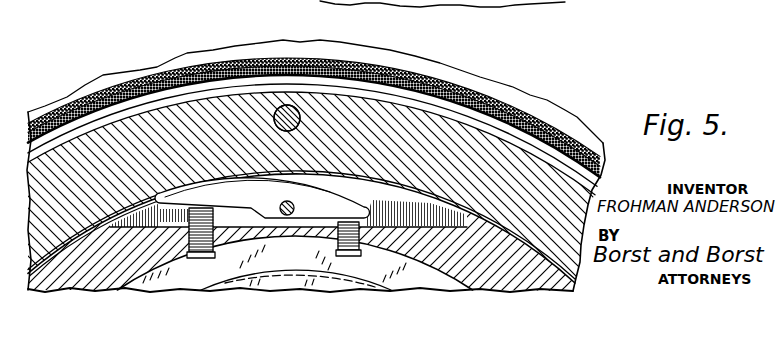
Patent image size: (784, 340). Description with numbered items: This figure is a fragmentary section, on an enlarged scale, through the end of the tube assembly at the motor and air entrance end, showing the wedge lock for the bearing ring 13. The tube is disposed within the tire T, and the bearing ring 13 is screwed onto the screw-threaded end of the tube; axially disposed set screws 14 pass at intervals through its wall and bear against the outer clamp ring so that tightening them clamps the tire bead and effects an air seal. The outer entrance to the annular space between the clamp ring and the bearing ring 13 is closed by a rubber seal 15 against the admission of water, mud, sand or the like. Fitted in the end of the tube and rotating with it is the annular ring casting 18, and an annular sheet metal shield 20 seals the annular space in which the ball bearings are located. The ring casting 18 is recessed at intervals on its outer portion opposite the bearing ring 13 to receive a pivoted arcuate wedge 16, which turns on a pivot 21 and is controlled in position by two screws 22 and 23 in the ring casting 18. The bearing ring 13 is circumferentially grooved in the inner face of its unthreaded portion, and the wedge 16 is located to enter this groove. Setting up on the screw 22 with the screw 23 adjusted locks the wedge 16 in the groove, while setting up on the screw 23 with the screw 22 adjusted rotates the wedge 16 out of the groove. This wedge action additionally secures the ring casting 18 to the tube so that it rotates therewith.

The tire T is at (154, 67).
The bearing ring 13 is at (53, 163).
The set screw 14 is at (288, 106).
The rubber seal 15 is at (435, 80).
The pivoted arcuate wedge 16 is at (253, 190).
The ring casting 18 is at (427, 251).
The sheet metal shield 20 is at (274, 267).
The pivot 21 is at (292, 202).
The screw 22 is at (192, 256).
The screw 23 is at (349, 253).